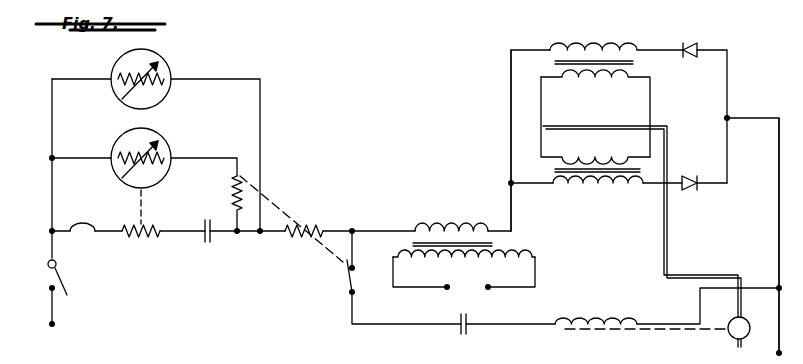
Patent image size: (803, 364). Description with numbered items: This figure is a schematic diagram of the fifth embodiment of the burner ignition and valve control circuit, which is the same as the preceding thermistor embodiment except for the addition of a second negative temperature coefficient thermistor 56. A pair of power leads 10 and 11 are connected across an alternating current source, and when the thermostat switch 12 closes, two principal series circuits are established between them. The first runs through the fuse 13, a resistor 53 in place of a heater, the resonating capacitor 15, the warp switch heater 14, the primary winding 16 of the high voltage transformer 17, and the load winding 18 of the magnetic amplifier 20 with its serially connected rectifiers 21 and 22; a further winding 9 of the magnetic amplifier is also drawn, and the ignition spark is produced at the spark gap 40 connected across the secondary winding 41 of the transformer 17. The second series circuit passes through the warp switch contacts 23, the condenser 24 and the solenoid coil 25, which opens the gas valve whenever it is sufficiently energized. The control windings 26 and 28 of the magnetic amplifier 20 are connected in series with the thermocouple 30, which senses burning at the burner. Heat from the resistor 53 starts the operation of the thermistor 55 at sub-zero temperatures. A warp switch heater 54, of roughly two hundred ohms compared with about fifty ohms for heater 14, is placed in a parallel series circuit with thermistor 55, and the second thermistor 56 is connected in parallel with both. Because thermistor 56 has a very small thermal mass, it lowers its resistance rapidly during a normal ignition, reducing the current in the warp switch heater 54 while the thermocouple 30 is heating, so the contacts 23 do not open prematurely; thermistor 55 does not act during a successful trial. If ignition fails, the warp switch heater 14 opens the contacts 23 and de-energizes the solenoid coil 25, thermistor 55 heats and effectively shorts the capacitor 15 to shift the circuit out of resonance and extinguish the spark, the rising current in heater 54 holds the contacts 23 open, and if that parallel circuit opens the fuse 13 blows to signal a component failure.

The secondary winding 9 is at (600, 190).
The power lead 10 is at (53, 309).
The power lead 11 is at (779, 238).
The thermostat switch 12 is at (58, 280).
The fuse 13 is at (80, 225).
The warp switch heater 14 is at (310, 224).
The resonating capacitor 15 is at (210, 242).
The primary winding 16 is at (446, 224).
The high voltage transformer 17 is at (500, 239).
The load winding 18 is at (612, 48).
The magnetic amplifier 20 is at (509, 113).
The rectifier 21 is at (688, 50).
The rectifier 22 is at (688, 190).
The warp switch contacts 23 is at (348, 292).
The condenser 24 is at (462, 331).
The solenoid coil 25 is at (637, 320).
The control winding 26 is at (612, 78).
The control winding 28 is at (610, 152).
The thermocouple 30 is at (541, 120).
The spark gap 40 is at (472, 289).
The secondary winding 41 is at (535, 262).
The resistor 53 is at (141, 238).
The warp switch heater 54 is at (232, 201).
The negative temperature coefficient thermistor 55 is at (166, 143).
The second negative temperature coefficient thermistor 56 is at (168, 64).